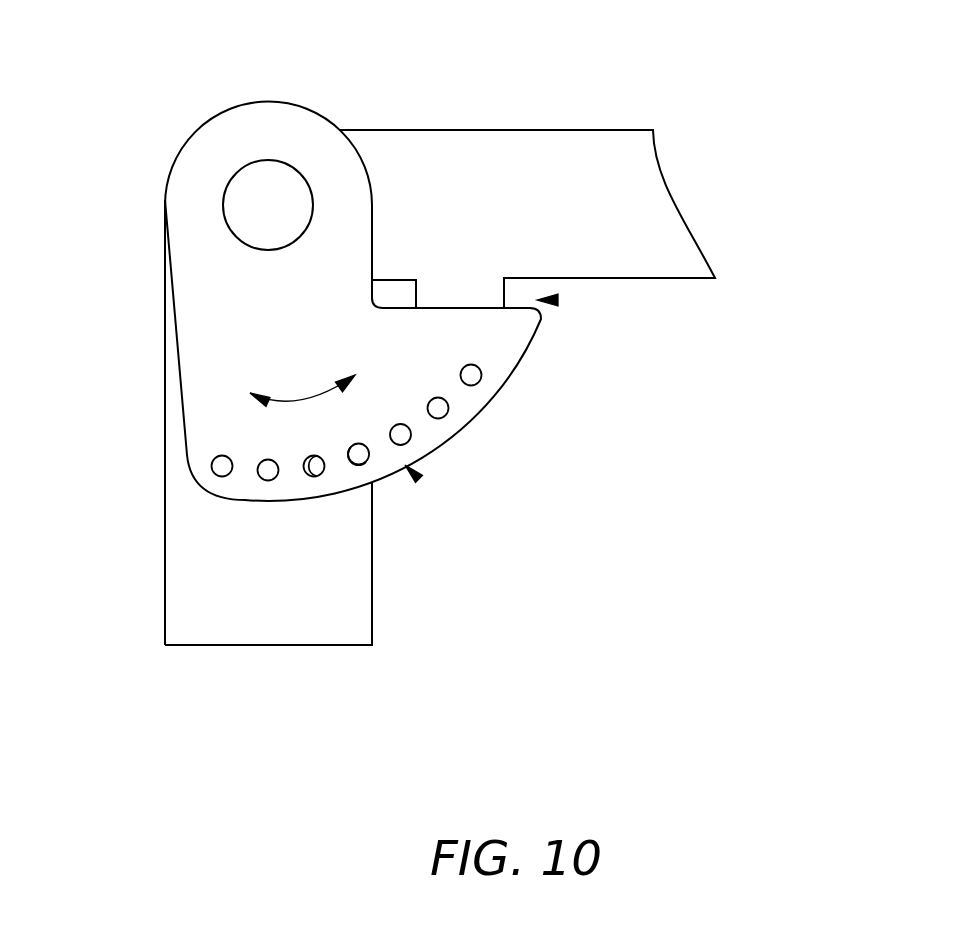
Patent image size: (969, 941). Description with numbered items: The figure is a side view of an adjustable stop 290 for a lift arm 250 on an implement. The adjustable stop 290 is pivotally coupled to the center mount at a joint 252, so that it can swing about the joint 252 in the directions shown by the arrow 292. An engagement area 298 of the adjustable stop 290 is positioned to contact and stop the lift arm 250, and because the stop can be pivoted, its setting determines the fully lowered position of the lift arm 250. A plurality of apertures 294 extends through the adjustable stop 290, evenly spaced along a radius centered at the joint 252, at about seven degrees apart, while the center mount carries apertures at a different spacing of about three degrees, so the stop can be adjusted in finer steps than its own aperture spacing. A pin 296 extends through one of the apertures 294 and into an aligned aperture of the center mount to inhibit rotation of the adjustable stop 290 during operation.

The lift arm 250 is at (573, 203).
The joint 252 is at (250, 197).
The adjustable stop 290 is at (513, 357).
The arrow 292 is at (302, 398).
The apertures 294 is at (418, 478).
The pin 296 is at (408, 441).
The engagement area 298 is at (556, 300).